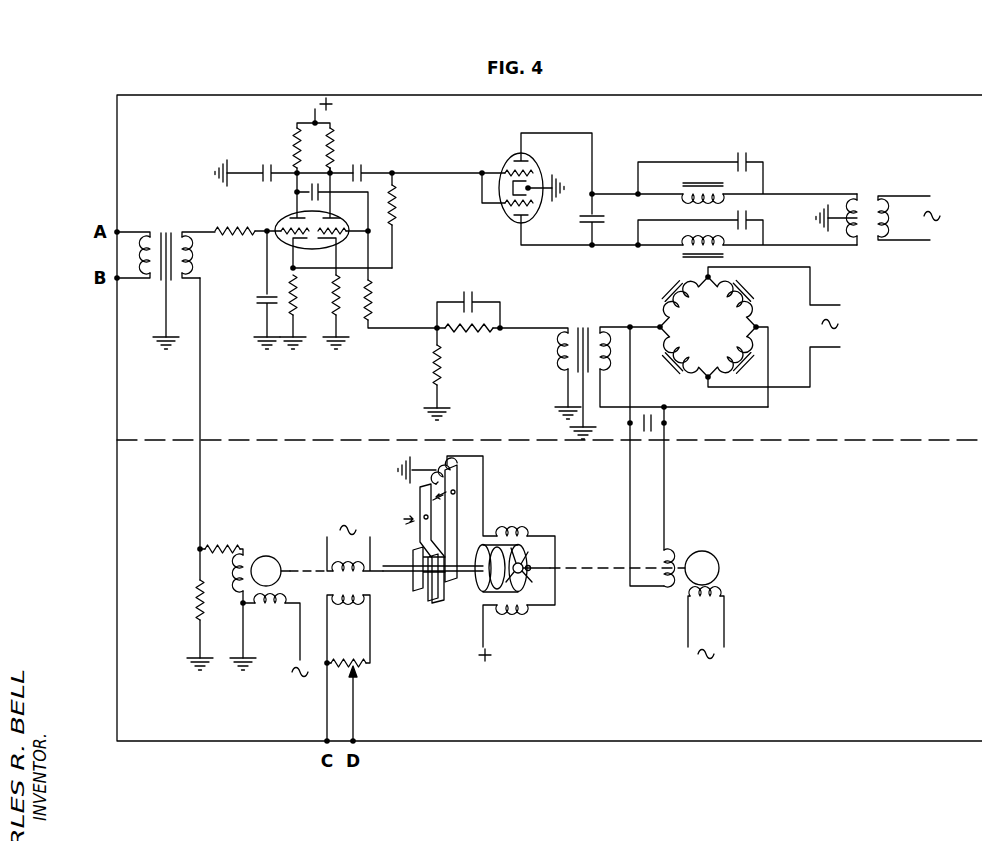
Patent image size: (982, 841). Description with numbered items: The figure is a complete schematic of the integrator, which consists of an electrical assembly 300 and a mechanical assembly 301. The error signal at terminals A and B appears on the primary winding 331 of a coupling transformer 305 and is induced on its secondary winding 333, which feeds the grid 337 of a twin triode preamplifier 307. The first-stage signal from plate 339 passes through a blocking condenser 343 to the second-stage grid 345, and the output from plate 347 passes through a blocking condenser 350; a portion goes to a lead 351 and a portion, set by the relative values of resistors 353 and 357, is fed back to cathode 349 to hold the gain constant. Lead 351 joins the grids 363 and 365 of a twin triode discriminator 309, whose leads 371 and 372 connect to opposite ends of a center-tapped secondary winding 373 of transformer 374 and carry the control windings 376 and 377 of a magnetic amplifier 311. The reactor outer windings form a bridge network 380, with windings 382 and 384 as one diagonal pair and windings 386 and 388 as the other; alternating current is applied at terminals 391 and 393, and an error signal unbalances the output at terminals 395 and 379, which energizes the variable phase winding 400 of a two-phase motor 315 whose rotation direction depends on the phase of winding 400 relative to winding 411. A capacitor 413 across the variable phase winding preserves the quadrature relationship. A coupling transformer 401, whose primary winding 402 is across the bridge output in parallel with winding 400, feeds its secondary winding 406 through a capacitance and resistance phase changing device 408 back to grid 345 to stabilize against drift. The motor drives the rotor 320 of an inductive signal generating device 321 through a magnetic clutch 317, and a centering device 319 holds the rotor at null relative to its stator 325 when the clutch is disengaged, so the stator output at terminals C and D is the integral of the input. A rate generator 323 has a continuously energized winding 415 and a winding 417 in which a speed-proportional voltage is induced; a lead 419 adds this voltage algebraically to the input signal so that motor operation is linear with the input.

The electrical assembly 300 is at (116, 176).
The mechanical assembly 301 is at (116, 535).
The coupling transformer 305 is at (175, 277).
The preamplifier 307 is at (302, 221).
The discriminator 309 is at (514, 185).
The magnetic amplifier 311 is at (646, 280).
The motor 315 is at (713, 540).
The magnetic clutch 317 is at (531, 553).
The centering device 319 is at (376, 506).
The rotor 320 is at (355, 549).
The inductive signal generating device 321 is at (338, 634).
The rate generator 323 is at (254, 547).
The stator 325 is at (348, 668).
The primary winding 331 is at (134, 255).
The secondary winding 333 is at (191, 254).
The grid 337 is at (283, 229).
The plate 339 is at (296, 214).
The blocking condenser 343 is at (308, 178).
The grid 345 is at (337, 242).
The plate 347 is at (335, 215).
The cathode 349 is at (291, 243).
The blocking condenser 350 is at (358, 166).
The lead 351 is at (474, 199).
The resistor 353 is at (399, 215).
The resistor 357 is at (296, 302).
The grid 363 is at (509, 171).
The grid 365 is at (508, 207).
The lead 371 is at (557, 131).
The lead 372 is at (581, 248).
The center-tapped secondary winding 373 is at (853, 198).
The transformer 374 is at (877, 205).
The control winding 376 is at (690, 182).
The control winding 377 is at (695, 242).
The terminal 379 is at (758, 327).
The bridge network 380 is at (730, 330).
The outer winding 382 is at (707, 298).
The outer winding 384 is at (708, 356).
The outer winding 386 is at (680, 358).
The outer winding 388 is at (757, 304).
The terminal 391 is at (706, 277).
The terminal 393 is at (706, 379).
The terminal 395 is at (658, 325).
The variable phase winding 400 is at (662, 555).
The coupling transformer 401 is at (634, 359).
The primary winding 402 is at (604, 331).
The secondary winding 406 is at (560, 352).
The phase changing device 408 is at (503, 309).
The winding 411 is at (706, 603).
The capacitor 413 is at (668, 456).
The winding 415 is at (281, 610).
The winding 417 is at (221, 607).
The lead 419 is at (204, 509).